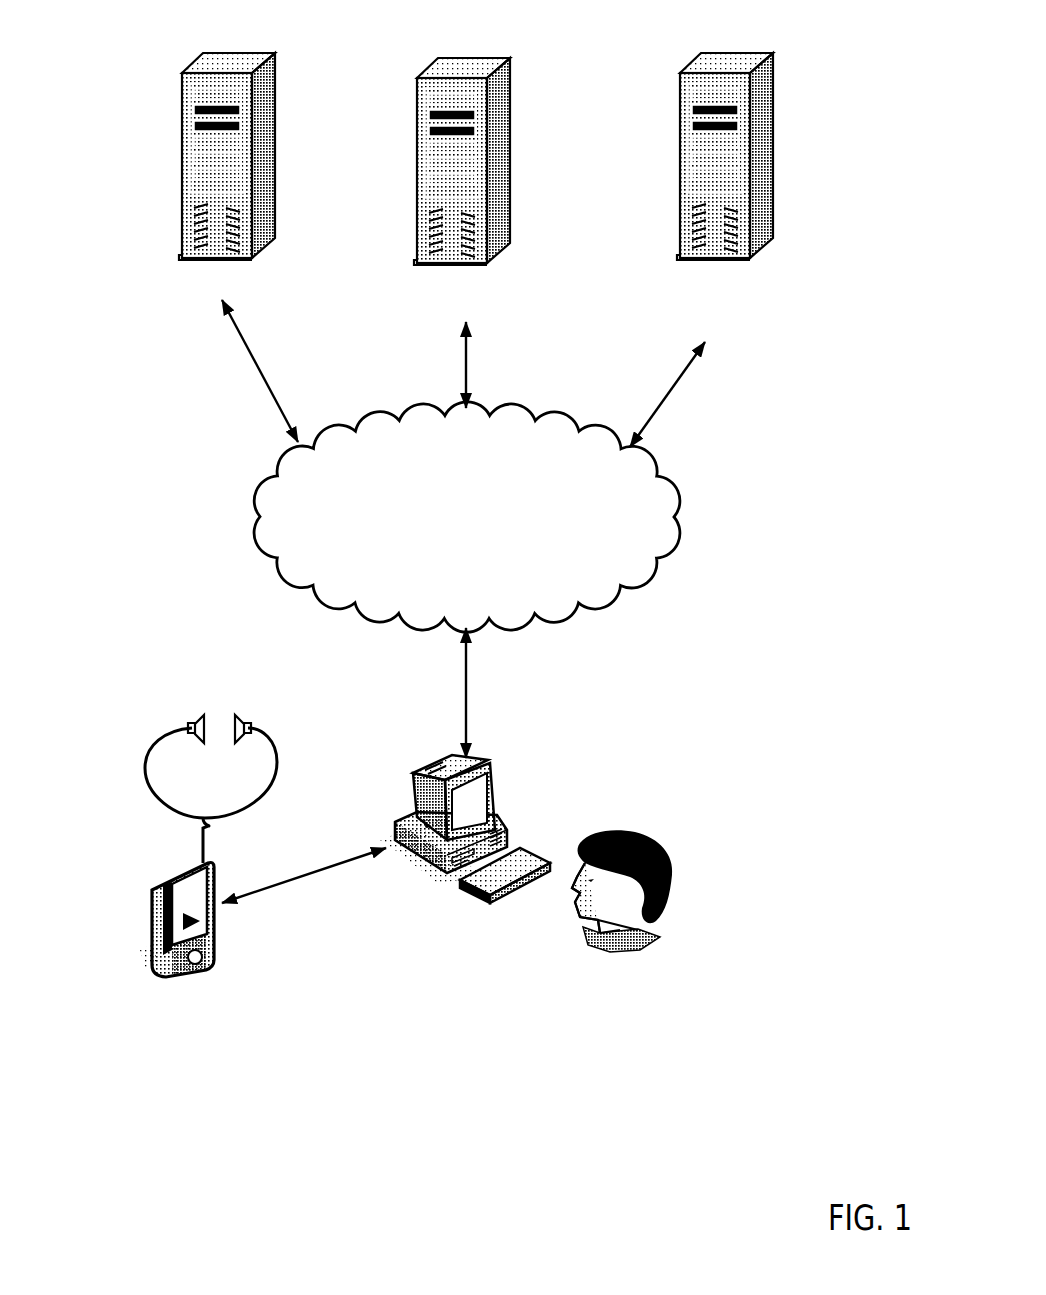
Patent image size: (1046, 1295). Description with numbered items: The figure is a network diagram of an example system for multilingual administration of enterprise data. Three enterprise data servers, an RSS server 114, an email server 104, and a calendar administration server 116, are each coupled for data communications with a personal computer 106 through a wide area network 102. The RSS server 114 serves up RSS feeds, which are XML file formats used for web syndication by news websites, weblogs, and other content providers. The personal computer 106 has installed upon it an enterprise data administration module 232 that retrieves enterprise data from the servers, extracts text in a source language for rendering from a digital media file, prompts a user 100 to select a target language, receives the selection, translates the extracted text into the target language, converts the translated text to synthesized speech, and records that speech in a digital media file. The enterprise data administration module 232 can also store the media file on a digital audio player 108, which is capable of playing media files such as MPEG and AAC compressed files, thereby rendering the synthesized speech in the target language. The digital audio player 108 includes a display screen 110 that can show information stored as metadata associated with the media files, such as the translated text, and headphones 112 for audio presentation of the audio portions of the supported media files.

The user 100 is at (757, 920).
The wide area network 102 is at (512, 531).
The email server 104 is at (533, 296).
The personal computer 106 is at (546, 779).
The digital audio player 108 is at (170, 946).
The display screen 110 is at (128, 911).
The headphones 112 is at (211, 699).
The RSS server 114 is at (292, 292).
The calendar administration server 116 is at (768, 323).
The enterprise data administration module 232 is at (427, 826).